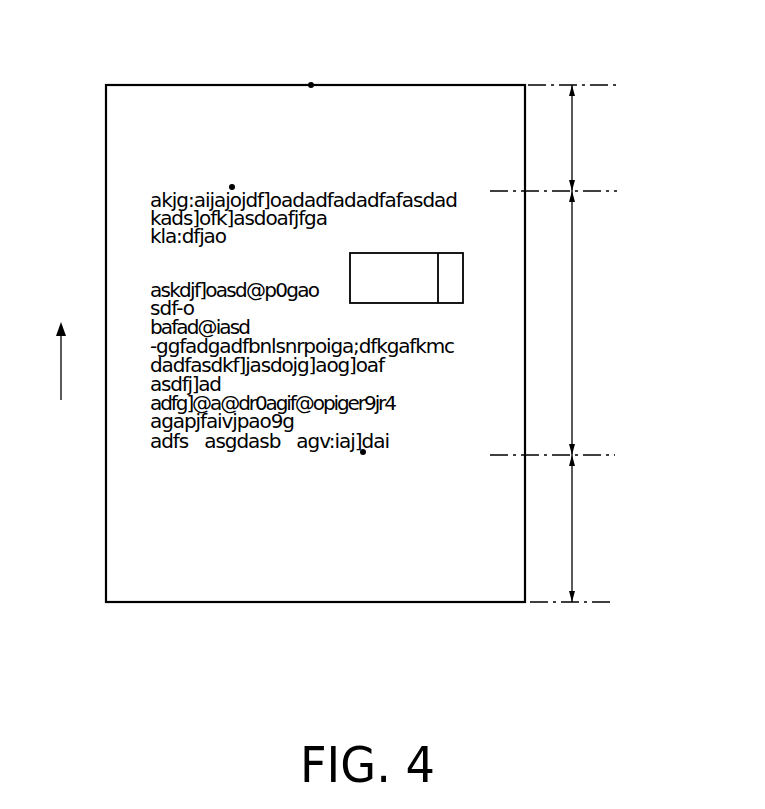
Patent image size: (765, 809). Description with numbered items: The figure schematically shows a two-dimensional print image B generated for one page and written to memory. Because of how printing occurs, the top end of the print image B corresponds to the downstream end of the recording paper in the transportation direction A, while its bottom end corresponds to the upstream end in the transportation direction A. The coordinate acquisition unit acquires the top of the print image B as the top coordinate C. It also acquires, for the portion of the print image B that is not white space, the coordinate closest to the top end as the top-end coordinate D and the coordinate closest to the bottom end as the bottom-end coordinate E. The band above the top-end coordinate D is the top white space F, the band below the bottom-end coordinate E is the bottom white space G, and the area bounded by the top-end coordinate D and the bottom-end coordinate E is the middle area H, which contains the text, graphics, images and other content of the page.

The transportation direction A is at (52, 361).
The print image B is at (505, 72).
The top coordinate C is at (311, 85).
The top-end coordinate D is at (232, 187).
The bottom-end coordinate E is at (363, 452).
The top white space F is at (572, 150).
The middle area H is at (572, 305).
The bottom white space G is at (572, 520).